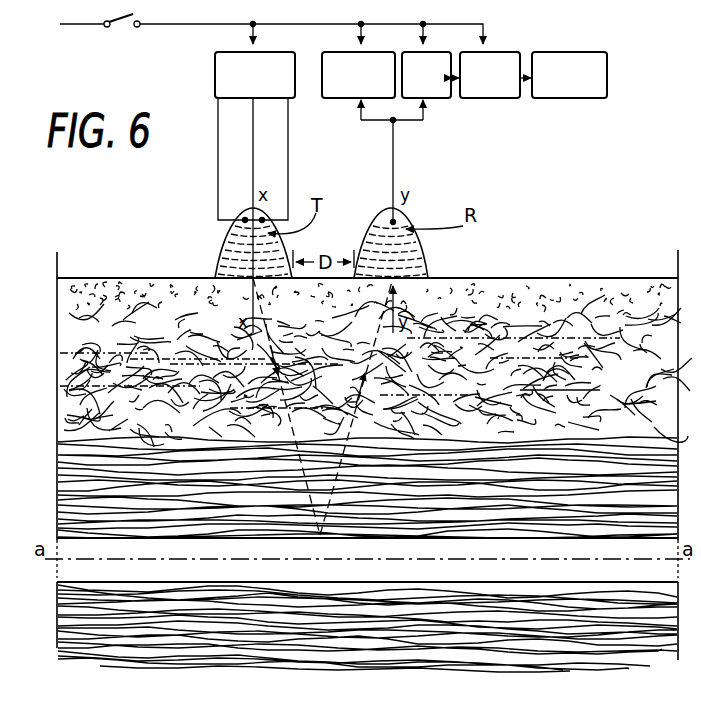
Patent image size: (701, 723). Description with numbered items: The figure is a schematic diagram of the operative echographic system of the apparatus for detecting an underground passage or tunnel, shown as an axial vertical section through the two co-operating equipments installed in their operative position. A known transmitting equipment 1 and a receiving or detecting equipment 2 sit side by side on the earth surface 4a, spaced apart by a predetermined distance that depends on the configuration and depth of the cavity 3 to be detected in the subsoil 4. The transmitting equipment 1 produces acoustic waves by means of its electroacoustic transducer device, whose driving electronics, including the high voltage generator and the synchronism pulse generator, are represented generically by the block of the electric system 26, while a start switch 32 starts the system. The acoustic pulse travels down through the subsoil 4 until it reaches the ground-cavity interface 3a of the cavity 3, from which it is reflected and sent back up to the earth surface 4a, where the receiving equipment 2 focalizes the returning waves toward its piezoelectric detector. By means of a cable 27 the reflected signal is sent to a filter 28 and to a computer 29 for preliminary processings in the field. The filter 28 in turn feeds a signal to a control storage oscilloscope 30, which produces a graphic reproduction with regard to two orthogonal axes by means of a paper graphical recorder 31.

The transmitting equipment 1 is at (212, 238).
The receiving or detecting equipment 2 is at (434, 253).
The cavity 3 is at (432, 573).
The ground-cavity interface 3a is at (500, 540).
The subsoil 4 is at (525, 322).
The earth surface 4a is at (111, 277).
The electric system 26 is at (289, 53).
The cable 27 is at (394, 167).
The filter 28 is at (430, 85).
The computer 29 is at (333, 98).
The control storage oscilloscope 30 is at (488, 98).
The paper graphical recorder 31 is at (553, 98).
The start switch 32 is at (118, 28).